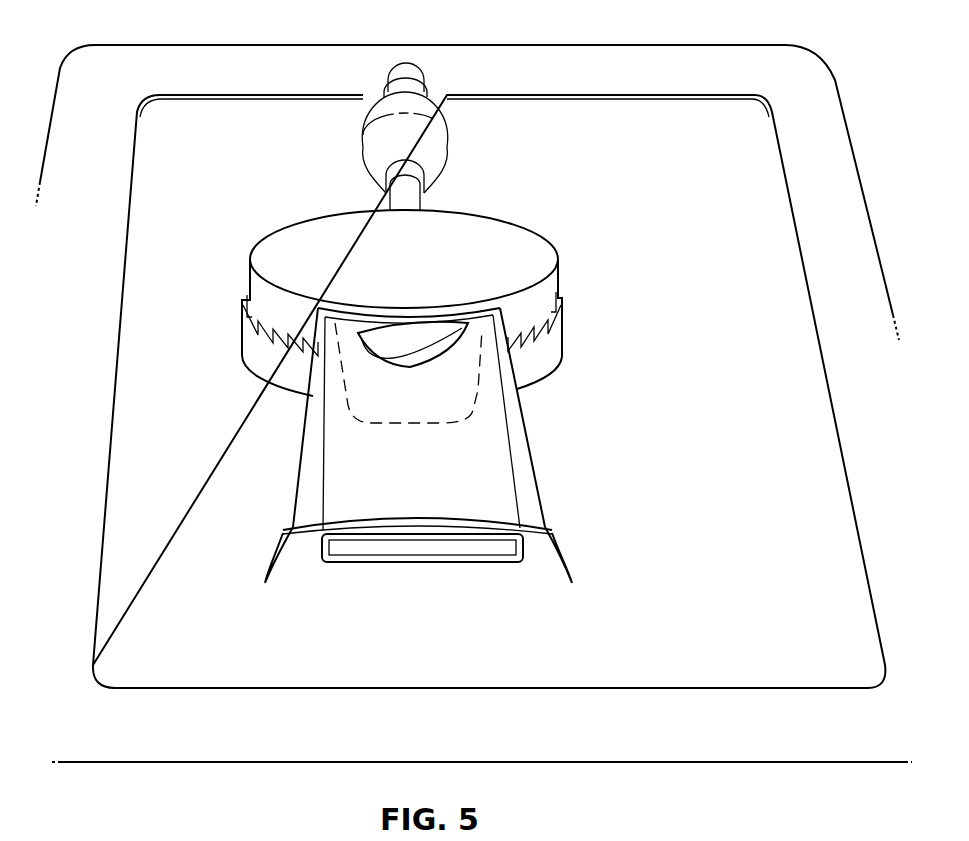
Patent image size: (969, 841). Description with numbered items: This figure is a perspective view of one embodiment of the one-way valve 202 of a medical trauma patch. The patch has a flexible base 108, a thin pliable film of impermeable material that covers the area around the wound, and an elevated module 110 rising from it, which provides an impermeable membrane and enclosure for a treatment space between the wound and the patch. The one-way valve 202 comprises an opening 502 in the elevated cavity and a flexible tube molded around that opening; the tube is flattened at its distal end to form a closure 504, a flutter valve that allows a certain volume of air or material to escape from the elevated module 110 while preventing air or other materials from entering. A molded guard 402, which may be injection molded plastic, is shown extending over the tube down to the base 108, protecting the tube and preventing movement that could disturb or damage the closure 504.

The flexible base 108 is at (213, 663).
The elevated module 110 is at (483, 235).
The molded guard 402 is at (335, 470).
The one-way valve 202 is at (450, 415).
The opening 502 is at (440, 342).
The closure 504 is at (380, 547).